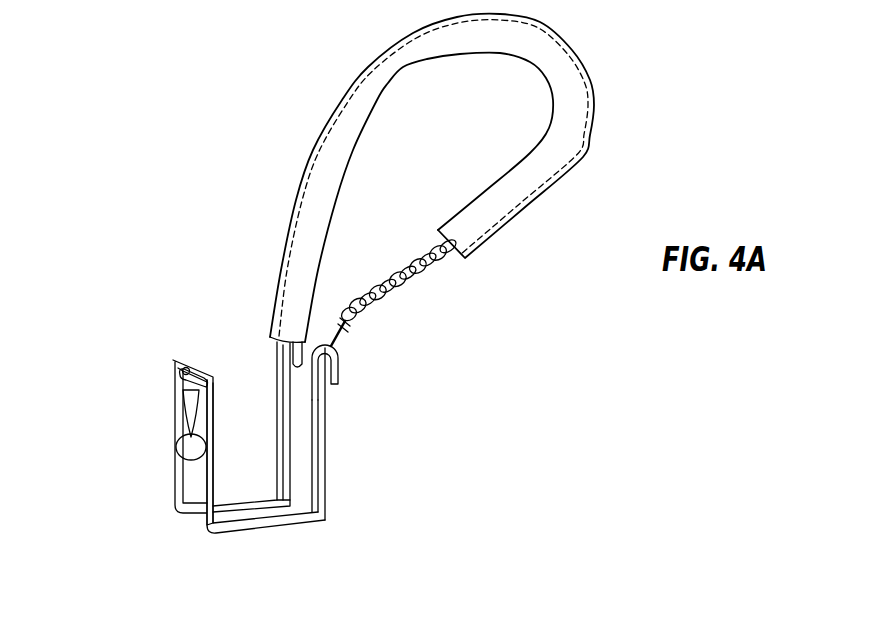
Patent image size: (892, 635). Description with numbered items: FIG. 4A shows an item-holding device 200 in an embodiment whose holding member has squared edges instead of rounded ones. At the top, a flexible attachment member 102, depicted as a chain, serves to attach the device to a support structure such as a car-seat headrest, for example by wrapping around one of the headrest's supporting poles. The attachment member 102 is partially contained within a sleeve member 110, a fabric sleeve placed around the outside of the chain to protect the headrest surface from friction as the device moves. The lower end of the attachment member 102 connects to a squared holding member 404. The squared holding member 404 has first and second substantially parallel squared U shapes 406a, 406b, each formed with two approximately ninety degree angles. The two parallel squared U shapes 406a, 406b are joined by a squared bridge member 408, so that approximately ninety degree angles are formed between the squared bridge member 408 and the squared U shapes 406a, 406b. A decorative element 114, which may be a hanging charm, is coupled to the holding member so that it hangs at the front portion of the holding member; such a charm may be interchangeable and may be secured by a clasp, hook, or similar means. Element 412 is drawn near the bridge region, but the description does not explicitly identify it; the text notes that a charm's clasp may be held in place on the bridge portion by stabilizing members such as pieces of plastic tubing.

The leash assembly 200 is at (176, 92).
The sleeve member 110 is at (580, 153).
The attachment member 102 is at (423, 275).
The squared holding member 404 is at (324, 437).
The first squared U shape 406a is at (295, 526).
The second squared U shape 406b is at (274, 498).
The squared bridge member 408 is at (178, 362).
The pin 412 is at (194, 363).
The decorative element 114 is at (175, 447).